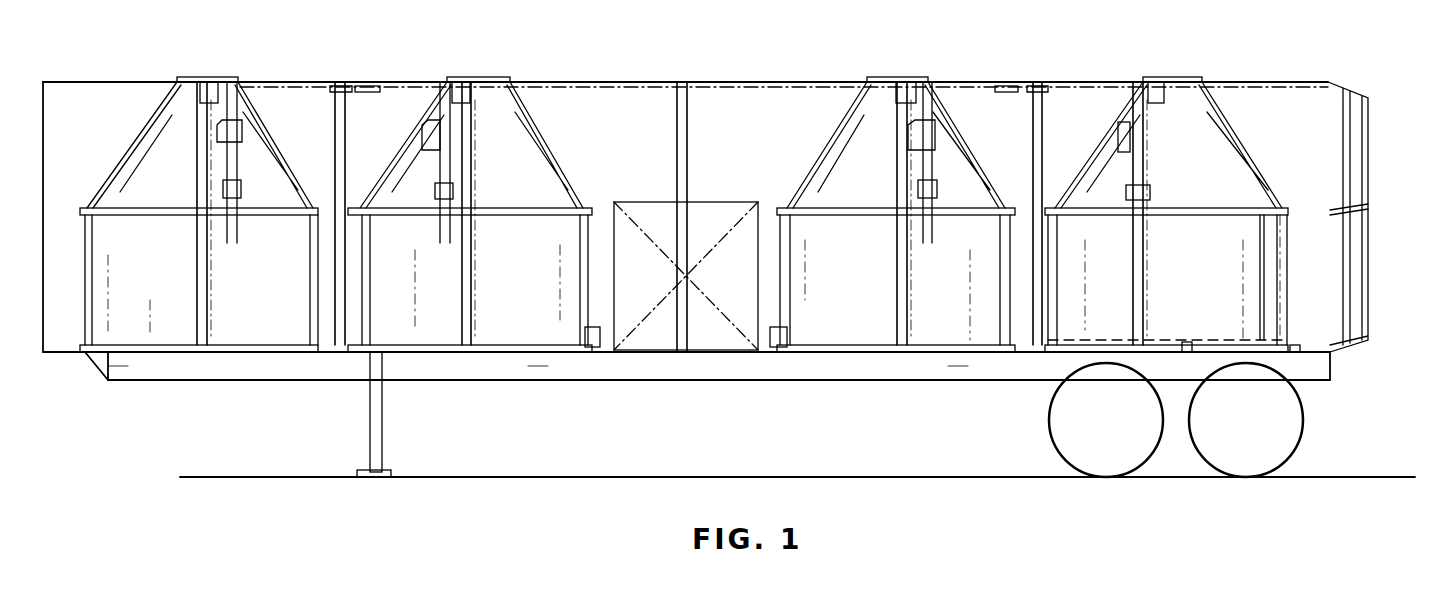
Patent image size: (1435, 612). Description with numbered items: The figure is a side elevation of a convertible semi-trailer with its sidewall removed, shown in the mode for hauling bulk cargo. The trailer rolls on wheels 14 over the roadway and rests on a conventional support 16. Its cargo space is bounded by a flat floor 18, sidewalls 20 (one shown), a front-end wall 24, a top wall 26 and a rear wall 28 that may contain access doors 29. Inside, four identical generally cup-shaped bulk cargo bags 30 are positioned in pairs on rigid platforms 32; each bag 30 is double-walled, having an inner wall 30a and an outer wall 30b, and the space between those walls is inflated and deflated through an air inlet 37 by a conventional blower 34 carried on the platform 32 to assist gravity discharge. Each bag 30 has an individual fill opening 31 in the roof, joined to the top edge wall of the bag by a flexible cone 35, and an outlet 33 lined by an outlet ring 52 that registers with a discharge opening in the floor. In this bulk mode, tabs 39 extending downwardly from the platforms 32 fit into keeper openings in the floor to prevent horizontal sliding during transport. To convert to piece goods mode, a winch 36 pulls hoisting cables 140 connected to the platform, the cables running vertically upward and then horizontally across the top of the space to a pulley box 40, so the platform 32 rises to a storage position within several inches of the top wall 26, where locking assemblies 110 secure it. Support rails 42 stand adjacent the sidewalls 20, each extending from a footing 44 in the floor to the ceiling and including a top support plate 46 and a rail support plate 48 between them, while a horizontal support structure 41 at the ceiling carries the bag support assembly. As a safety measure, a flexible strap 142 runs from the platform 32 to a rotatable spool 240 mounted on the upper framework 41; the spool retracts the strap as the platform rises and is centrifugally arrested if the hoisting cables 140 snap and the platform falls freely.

The wheels 14 is at (1062, 428).
The support 16 is at (382, 440).
The floor 18 is at (698, 352).
The sidewall 20 is at (1282, 95).
The front-end wall 24 is at (43, 143).
The top wall 26 is at (96, 82).
The rear wall 28 is at (1328, 150).
The access doors 29 is at (1368, 190).
The bulk cargo bag 30 is at (102, 355).
The inner wall 30a is at (1272, 262).
The outer wall 30b is at (1286, 332).
The fill opening 31 is at (1172, 80).
The platform 32 is at (528, 355).
The outlet 33 is at (1177, 340).
The blower 34 is at (588, 342).
The flexible cone 35 is at (1233, 137).
The winch 36 is at (695, 88).
The air inlet 37 is at (1188, 352).
The tabs 39 is at (784, 352).
The pulley box 40 is at (368, 93).
The horizontal support structure 41 is at (808, 82).
The support rails 42 is at (203, 310).
The footing 44 is at (882, 352).
The top support plate 46 is at (908, 95).
The rail support plate 48 is at (897, 250).
The outlet ring 52 is at (677, 138).
The locking assembly 110 is at (1130, 170).
The cables 140 is at (215, 272).
The flexible strap 142 is at (372, 288).
The spool 240 is at (338, 88).